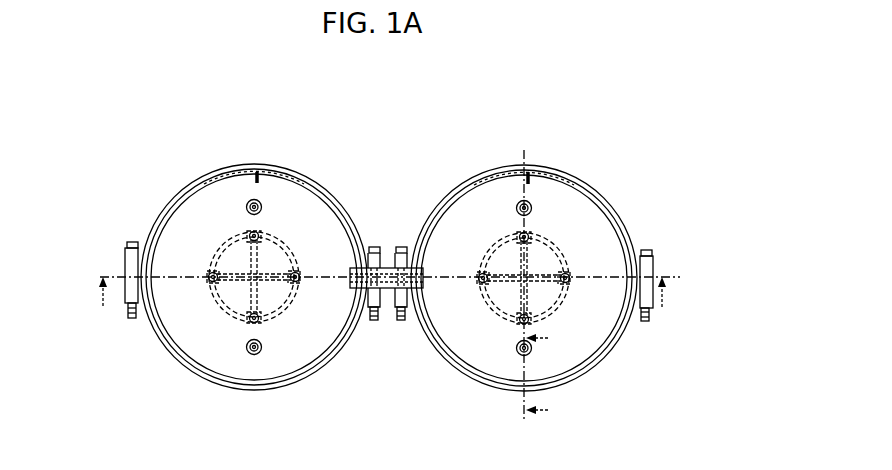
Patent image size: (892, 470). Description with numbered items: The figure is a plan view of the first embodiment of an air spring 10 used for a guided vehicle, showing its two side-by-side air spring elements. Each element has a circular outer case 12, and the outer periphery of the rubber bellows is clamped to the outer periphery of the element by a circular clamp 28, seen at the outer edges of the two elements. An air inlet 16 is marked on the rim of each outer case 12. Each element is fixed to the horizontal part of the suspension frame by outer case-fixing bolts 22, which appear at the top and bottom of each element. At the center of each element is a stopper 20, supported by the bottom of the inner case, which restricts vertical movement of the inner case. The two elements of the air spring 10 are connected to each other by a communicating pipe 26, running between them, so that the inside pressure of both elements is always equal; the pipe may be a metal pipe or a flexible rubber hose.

The air spring 10 is at (632, 183).
The outer case 12 is at (192, 220).
The air inlet 16 is at (255, 175).
The stopper 20 is at (273, 300).
The outer case-fixing bolt 22 is at (261, 203).
The communicating pipe 26 is at (388, 264).
The circular clamp 28 is at (127, 245).